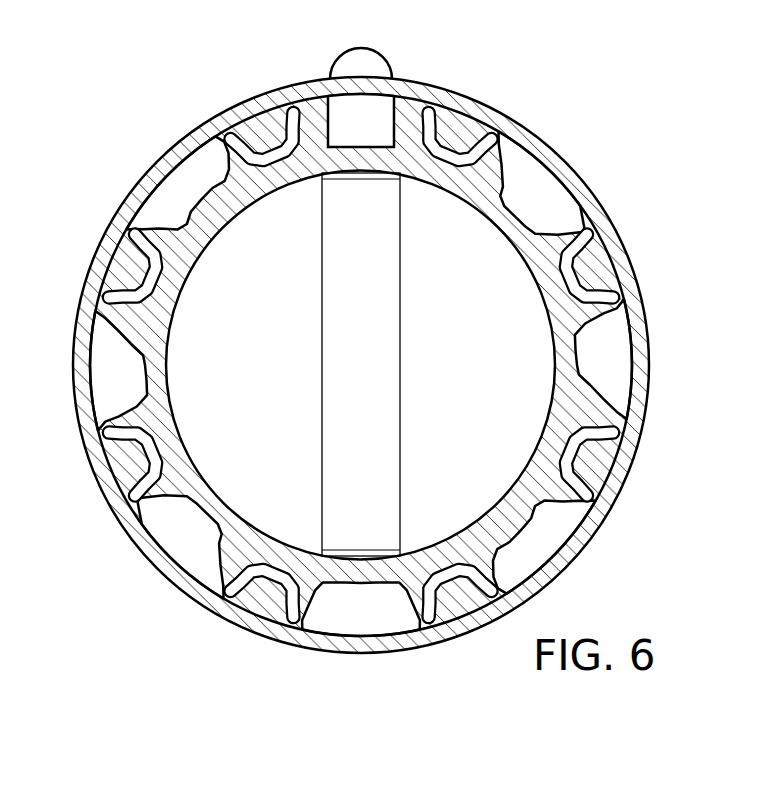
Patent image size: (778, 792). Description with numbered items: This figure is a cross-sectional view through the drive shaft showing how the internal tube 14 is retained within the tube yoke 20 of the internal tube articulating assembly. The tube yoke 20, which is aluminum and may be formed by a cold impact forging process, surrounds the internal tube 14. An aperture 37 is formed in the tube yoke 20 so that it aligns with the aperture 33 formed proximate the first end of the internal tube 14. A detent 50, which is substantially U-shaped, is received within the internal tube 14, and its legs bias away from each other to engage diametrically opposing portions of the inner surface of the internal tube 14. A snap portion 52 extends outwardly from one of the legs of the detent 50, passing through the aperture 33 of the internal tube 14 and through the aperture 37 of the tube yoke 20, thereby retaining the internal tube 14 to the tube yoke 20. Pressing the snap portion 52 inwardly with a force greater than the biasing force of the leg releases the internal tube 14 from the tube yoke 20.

The internal tube 14 is at (520, 207).
The tube yoke 20 is at (168, 598).
The aperture 33 is at (400, 176).
The aperture 37 is at (395, 102).
The detent 50 is at (359, 530).
The snap portion 52 is at (360, 49).